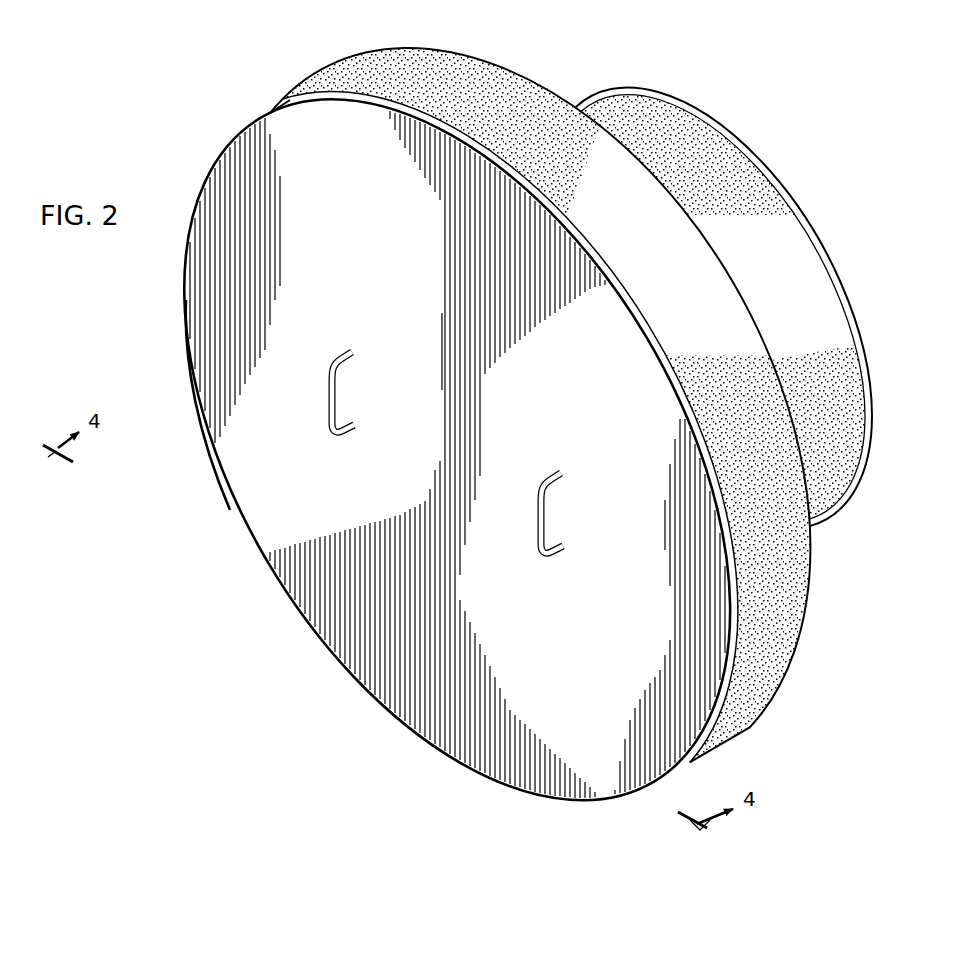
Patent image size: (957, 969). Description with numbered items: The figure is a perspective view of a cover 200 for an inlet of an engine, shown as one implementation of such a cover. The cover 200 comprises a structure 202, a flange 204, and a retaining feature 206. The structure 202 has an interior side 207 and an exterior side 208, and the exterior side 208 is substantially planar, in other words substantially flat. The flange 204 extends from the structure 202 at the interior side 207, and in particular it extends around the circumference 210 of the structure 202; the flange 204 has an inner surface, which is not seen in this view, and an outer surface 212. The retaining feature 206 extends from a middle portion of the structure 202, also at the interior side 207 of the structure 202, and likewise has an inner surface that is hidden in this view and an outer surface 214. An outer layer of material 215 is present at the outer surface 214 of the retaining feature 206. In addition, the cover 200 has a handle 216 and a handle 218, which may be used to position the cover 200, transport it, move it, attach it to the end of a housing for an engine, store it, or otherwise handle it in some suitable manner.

The cover 200 is at (802, 89).
The structure 202 is at (314, 648).
The flange 204 is at (680, 274).
The retaining feature 206 is at (851, 275).
The interior side 207 is at (671, 350).
The exterior side 208 is at (251, 513).
The circumference 210 is at (272, 102).
The outer surface 212 is at (727, 292).
The outer surface 214 is at (801, 222).
The outer layer of material 215 is at (694, 129).
The handle 216 is at (352, 430).
The handle 218 is at (563, 548).